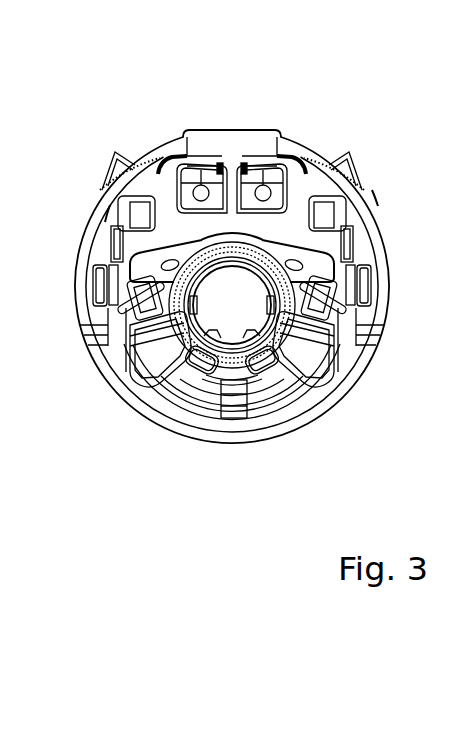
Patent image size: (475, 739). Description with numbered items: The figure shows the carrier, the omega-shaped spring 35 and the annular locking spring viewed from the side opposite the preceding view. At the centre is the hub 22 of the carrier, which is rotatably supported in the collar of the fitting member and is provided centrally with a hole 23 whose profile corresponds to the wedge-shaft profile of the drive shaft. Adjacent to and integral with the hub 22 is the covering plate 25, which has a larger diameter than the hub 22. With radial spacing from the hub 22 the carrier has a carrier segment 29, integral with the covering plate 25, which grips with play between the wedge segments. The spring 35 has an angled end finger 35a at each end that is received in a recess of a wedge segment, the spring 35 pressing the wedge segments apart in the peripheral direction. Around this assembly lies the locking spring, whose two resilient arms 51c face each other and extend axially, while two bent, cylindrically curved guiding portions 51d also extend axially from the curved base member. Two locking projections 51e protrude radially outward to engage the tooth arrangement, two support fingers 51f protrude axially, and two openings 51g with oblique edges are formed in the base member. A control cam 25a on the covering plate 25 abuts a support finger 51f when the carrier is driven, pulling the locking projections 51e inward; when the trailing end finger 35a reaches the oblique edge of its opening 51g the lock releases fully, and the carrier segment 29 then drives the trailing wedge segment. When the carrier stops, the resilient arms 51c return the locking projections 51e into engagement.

The hub 22 is at (258, 347).
The hole 23 is at (230, 308).
The covering plate 25 is at (302, 315).
The control cam 25a is at (118, 210).
The carrier segment 29 is at (223, 373).
The spring 35 is at (153, 160).
The end finger 35a is at (201, 190).
The resilient arm 51c is at (170, 155).
The guiding portion 51d is at (95, 292).
The locking projection 51e is at (110, 170).
The support finger 51f is at (112, 322).
The opening 51g is at (245, 163).